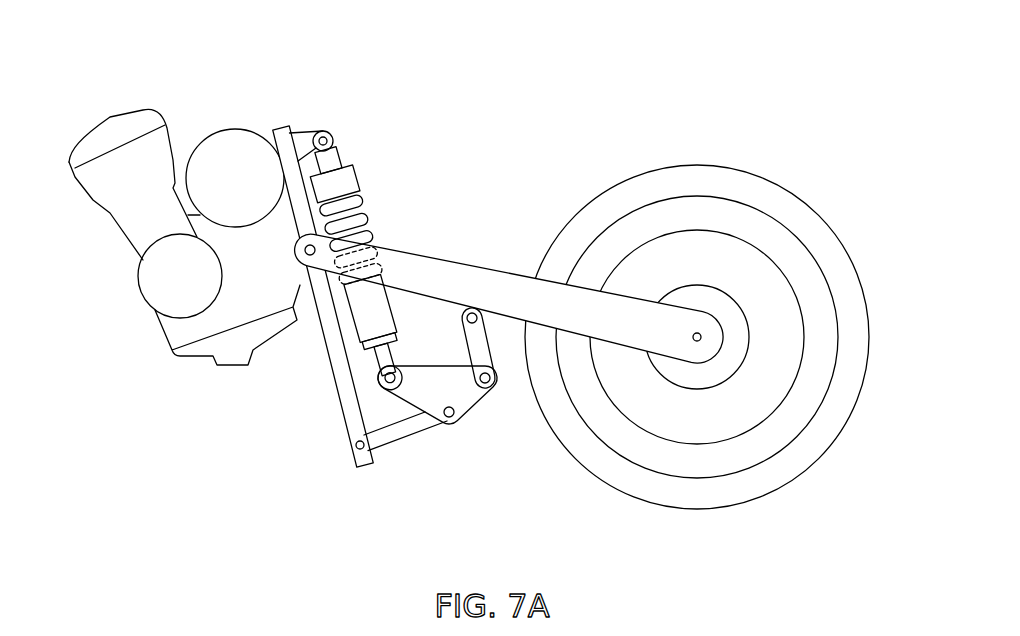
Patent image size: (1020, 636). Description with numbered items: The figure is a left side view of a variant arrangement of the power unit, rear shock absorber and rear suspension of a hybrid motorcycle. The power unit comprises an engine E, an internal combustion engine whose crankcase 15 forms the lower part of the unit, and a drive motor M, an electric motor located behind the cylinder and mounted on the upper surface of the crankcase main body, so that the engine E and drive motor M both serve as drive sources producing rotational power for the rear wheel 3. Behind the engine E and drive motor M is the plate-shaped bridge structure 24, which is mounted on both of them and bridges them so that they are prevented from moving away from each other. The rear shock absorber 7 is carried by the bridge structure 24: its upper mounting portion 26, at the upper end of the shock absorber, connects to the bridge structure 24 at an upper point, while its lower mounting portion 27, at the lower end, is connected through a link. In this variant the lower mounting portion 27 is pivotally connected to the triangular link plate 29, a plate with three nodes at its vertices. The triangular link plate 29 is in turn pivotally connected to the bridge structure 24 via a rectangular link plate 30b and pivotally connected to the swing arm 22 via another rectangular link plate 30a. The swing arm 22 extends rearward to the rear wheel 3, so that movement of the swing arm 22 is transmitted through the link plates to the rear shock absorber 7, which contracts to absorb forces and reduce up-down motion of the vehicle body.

The engine E is at (106, 112).
The drive motor M is at (221, 130).
The crankcase 15 is at (201, 377).
The upper mounting portion 26 is at (331, 128).
The rear shock absorber 7 is at (356, 174).
The lower mounting portion 27 is at (400, 357).
The swing arm 22 is at (497, 269).
The rear wheel 3 is at (704, 165).
The bridge structure 24 is at (346, 393).
The rectangular link plate 30b is at (407, 428).
The triangular link plate 29 is at (477, 403).
The rectangular link plate 30a is at (497, 350).